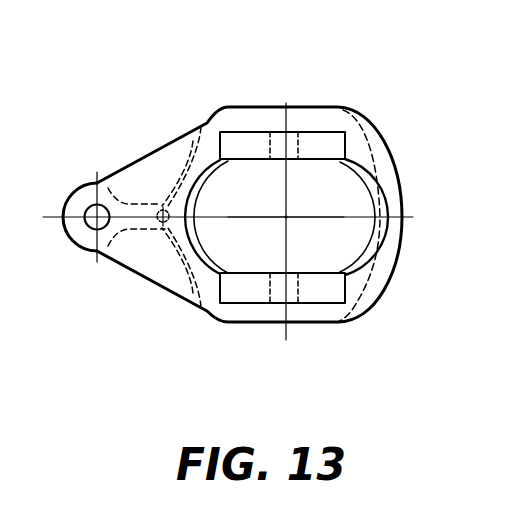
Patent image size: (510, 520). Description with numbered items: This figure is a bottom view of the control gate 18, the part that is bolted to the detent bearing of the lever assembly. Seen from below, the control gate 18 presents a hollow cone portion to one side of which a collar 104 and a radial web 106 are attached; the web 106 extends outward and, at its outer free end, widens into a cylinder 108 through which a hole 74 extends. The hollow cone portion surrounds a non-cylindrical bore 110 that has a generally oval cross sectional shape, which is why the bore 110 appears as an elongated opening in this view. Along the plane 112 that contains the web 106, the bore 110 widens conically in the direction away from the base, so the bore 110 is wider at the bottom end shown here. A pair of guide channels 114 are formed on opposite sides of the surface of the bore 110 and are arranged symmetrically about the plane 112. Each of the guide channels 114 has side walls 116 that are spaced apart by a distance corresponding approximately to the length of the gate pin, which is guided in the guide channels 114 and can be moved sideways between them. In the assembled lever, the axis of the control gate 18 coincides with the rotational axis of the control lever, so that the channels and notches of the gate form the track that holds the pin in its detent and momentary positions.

The control gate 18 is at (177, 78).
The hole 74 is at (90, 230).
The collar 104 is at (167, 272).
The radial web 106 is at (140, 226).
The cylinder 108 is at (111, 186).
The non-cylindrical bore 110 is at (363, 190).
The plane 112 is at (235, 217).
The guide channels 114 is at (318, 134).
The side walls 116 is at (250, 131).